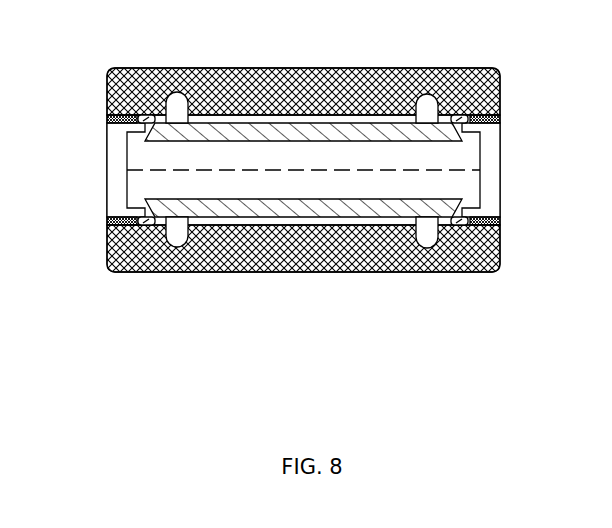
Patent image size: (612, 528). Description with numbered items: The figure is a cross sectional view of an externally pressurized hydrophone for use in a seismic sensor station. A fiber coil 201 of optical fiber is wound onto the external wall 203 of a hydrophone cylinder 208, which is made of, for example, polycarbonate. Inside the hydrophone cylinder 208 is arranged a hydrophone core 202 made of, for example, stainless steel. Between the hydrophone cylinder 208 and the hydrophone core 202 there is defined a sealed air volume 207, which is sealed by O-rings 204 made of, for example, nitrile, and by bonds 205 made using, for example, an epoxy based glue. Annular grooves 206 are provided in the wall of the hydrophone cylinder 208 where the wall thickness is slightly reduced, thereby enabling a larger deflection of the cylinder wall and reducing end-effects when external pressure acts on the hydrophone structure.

The fiber coil 201 is at (217, 274).
The hydrophone core 202 is at (280, 216).
The external wall 203 is at (424, 274).
The O-rings 204 is at (460, 224).
The bonds 205 is at (483, 230).
The annular grooves 206 is at (172, 92).
The sealed air volume 207 is at (298, 113).
The hydrophone cylinder 208 is at (122, 94).